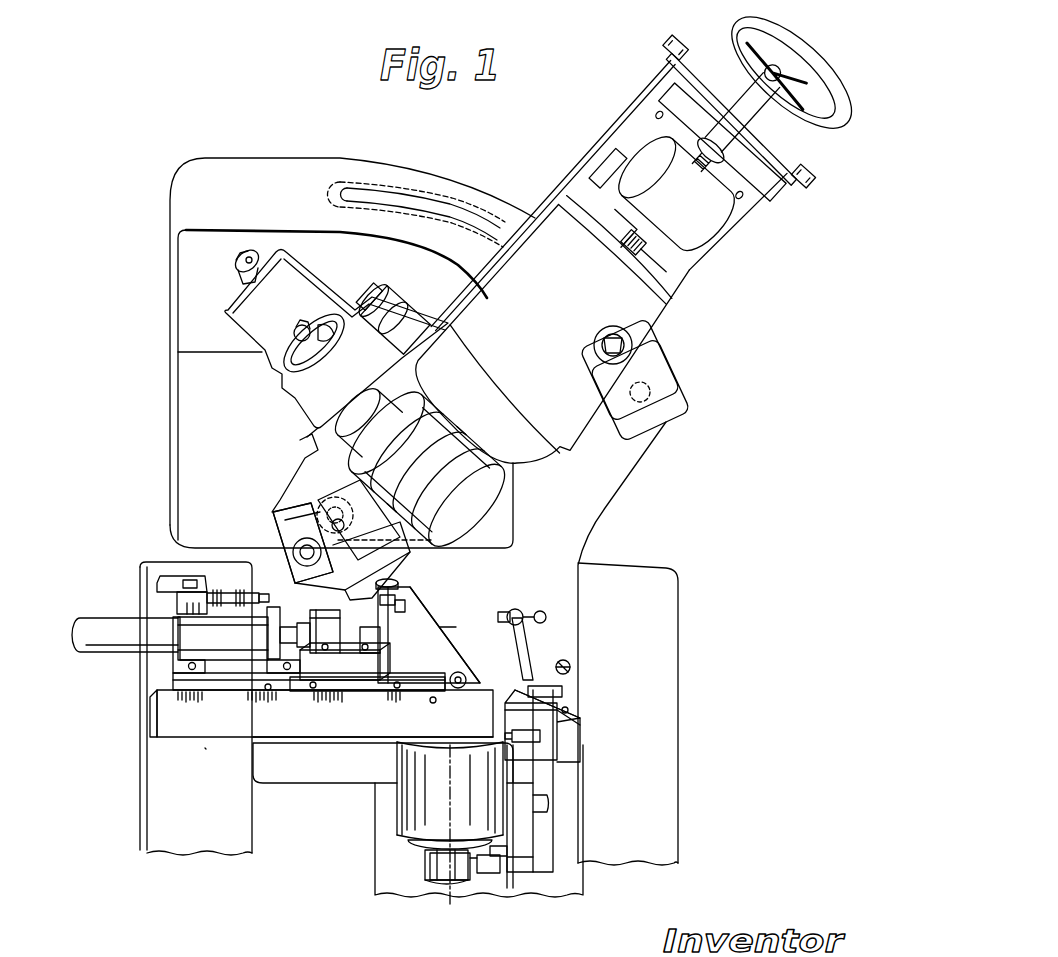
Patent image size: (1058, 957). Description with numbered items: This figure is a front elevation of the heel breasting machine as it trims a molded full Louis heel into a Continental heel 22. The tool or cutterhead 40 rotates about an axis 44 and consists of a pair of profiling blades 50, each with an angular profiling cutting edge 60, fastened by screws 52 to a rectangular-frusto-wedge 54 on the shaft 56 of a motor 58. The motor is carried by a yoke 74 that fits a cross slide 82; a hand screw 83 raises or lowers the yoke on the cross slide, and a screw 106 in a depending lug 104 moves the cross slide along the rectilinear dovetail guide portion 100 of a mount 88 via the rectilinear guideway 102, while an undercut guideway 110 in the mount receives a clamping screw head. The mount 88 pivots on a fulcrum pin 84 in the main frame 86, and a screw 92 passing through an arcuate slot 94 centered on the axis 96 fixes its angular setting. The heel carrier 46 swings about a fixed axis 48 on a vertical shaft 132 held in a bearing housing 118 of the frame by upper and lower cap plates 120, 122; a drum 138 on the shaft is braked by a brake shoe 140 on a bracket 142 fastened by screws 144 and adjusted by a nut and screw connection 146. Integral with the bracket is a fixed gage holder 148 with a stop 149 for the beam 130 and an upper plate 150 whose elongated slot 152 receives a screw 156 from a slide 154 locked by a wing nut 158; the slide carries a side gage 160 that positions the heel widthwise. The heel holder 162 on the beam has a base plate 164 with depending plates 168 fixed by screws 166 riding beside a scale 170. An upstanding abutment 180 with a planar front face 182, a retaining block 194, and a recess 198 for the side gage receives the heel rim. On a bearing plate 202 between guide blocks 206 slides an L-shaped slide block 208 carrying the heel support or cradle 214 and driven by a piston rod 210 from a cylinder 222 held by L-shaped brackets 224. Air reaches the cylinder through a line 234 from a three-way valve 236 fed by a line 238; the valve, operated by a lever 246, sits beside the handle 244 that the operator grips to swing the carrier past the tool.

The Continental heel 22 is at (400, 625).
The tool or cutterhead 40 is at (252, 503).
The axis 44 is at (413, 458).
The heel carrier 46 is at (204, 757).
The fixed axis 48 is at (448, 902).
The profiling blades 50 is at (357, 553).
The screws 52 is at (296, 546).
The rectangular-frusto-wedge 54 is at (370, 536).
The motor shaft 56 is at (632, 243).
The motor 58 is at (549, 327).
The angular profiling cutting edge 60 is at (272, 508).
The yoke 74 is at (694, 276).
The cross slide 82 is at (452, 322).
The hand screw 83 is at (710, 142).
The fulcrum pin 84 is at (318, 508).
The main frame 86 is at (410, 176).
The mount 88 is at (580, 170).
The screw 92 is at (630, 350).
The arcuate slot 94 is at (367, 205).
The axis 96 is at (337, 510).
The rectilinear dovetail guide portion 100 is at (319, 327).
The rectilinear guideway 102 is at (316, 346).
The depending lug 104 is at (238, 283).
The screw 106 is at (307, 320).
The undercut guideway 110 is at (667, 73).
The bearing housing 118 is at (420, 793).
The upper cap plate 120 is at (403, 745).
The lower cap plate 122 is at (430, 838).
The beam 130 is at (463, 720).
The vertical shaft 132 is at (461, 676).
The drum 138 is at (427, 853).
The brake shoe 140 is at (490, 874).
The bracket 142 is at (530, 847).
The screws 144 is at (548, 802).
The nut and screw connection 146 is at (512, 858).
The fixed gage holder 148 is at (577, 745).
The stop 149 is at (515, 740).
The upper plate 150 is at (580, 720).
The elongated slot 152 is at (560, 703).
The slide 154 is at (558, 693).
The screw 156 is at (537, 677).
The wing nut 158 is at (553, 677).
The side gage 160 is at (507, 612).
The heel holder 162 is at (440, 631).
The base plate 164 is at (188, 692).
The screws 166 is at (270, 693).
The depending plates 168 is at (290, 690).
The scale 170 is at (300, 712).
The upstanding abutment 180 is at (437, 652).
The planar front face 182 is at (389, 662).
The retaining block 194 is at (398, 585).
The recess 198 is at (396, 600).
The bearing plate 202 is at (337, 670).
The guide blocks 206 is at (355, 662).
The L-shaped slide block 208 is at (332, 630).
The piston rod 210 is at (268, 623).
The heel support, cradle or plunger 214 is at (380, 634).
The cylinder 222 is at (192, 638).
The L-shaped brackets 224 is at (180, 670).
The line 234 is at (227, 592).
The three-way valve 236 is at (180, 600).
The line 238 is at (252, 600).
The handle 244 is at (88, 641).
The lever 246 is at (160, 585).